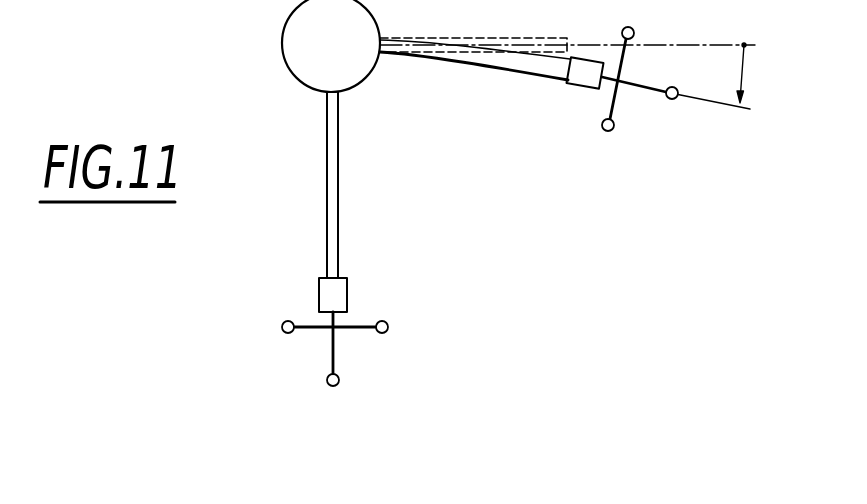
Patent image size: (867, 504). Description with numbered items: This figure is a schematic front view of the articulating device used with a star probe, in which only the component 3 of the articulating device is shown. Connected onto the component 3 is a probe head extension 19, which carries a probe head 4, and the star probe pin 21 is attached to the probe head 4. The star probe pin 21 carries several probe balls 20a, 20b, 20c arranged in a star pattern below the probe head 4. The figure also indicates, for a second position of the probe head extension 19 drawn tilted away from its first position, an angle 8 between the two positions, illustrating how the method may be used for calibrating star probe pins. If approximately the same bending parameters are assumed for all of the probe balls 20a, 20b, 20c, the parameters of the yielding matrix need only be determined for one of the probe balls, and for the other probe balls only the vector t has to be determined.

The component 3 is at (283, 40).
The probe head extension 19 is at (339, 222).
The probe head 4 is at (338, 293).
The tilt angle 8 is at (749, 73).
The probe ball 20a is at (284, 323).
The probe ball 20b is at (329, 385).
The probe ball 20c is at (387, 331).
The star probe pin 21 is at (341, 354).